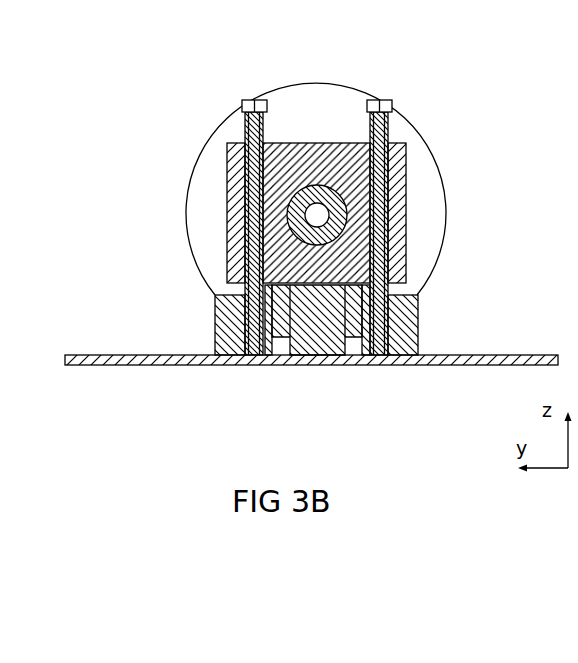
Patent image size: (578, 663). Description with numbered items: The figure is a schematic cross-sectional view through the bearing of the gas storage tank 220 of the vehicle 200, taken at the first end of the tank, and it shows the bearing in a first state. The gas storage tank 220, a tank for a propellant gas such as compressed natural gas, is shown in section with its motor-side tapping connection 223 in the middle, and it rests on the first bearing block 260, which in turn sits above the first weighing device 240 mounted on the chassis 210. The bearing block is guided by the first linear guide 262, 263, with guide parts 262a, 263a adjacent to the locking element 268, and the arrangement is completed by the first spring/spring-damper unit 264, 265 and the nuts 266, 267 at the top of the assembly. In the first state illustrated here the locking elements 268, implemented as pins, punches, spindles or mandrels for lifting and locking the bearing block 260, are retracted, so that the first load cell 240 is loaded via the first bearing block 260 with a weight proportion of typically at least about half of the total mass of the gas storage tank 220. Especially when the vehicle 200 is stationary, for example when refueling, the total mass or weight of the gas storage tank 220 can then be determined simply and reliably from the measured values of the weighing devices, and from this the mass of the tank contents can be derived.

The vehicle 200 is at (337, 39).
The chassis 210 is at (484, 355).
The gas storage tank 220 is at (201, 232).
The tapping connection of the gas storage tank 223 is at (320, 198).
The first weighing device 240 is at (418, 305).
The first bearing block 260 is at (229, 192).
The first linear guide 262 is at (379, 372).
The right fastener sleeve 262a is at (372, 293).
The first linear guide 263 is at (252, 372).
The left fastener sleeve 263a is at (266, 293).
The first spring/spring-damper unit 264 is at (396, 128).
The first spring/spring-damper unit 265 is at (238, 126).
The nut 266 is at (397, 99).
The nut 267 is at (237, 99).
The locking element 268 is at (357, 343).